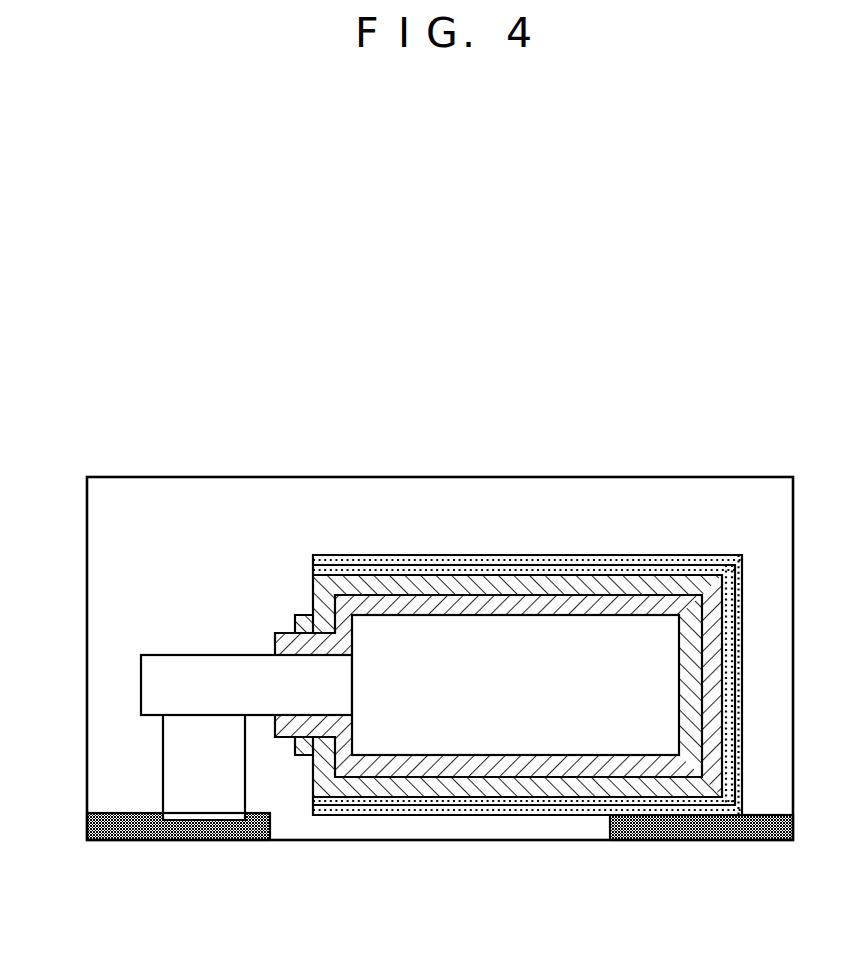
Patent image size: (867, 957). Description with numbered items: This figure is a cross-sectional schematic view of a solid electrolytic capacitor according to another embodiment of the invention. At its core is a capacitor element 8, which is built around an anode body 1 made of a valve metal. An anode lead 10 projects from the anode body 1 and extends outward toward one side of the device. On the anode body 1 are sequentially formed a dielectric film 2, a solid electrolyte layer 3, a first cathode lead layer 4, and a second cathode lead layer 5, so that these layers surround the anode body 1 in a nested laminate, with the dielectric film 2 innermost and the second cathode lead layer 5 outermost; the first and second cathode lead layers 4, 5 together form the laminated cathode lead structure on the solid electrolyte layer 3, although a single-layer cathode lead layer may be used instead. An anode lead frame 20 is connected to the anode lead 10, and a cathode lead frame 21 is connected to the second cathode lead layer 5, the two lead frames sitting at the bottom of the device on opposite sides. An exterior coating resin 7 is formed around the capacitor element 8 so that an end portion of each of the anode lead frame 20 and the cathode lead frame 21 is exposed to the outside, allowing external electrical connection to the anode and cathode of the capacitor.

The anode body 1 is at (443, 723).
The dielectric film 2 is at (360, 505).
The solid electrolyte layer 3 is at (551, 588).
The first cathode lead layer 4 is at (465, 570).
The second cathode lead layer 5 is at (390, 560).
The exterior coating resin 7 is at (100, 527).
The capacitor element 8 is at (508, 616).
The anode lead 10 is at (319, 700).
The anode lead frame 20 is at (148, 828).
The cathode lead frame 21 is at (657, 828).